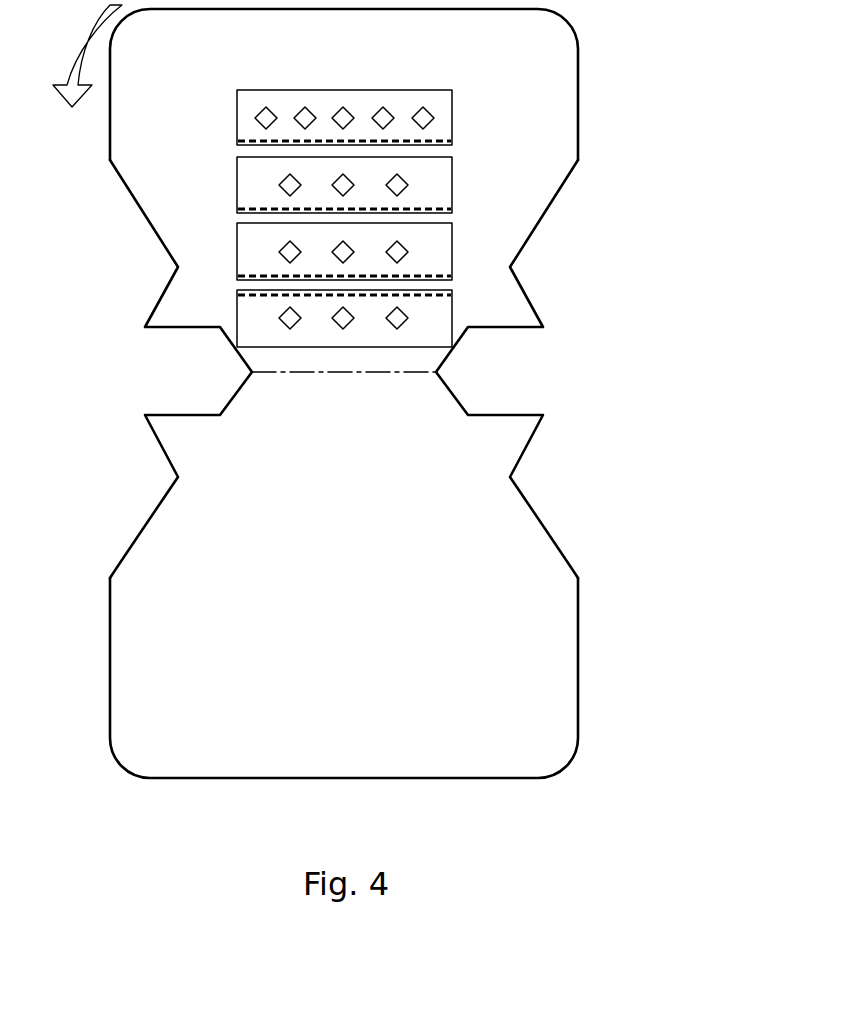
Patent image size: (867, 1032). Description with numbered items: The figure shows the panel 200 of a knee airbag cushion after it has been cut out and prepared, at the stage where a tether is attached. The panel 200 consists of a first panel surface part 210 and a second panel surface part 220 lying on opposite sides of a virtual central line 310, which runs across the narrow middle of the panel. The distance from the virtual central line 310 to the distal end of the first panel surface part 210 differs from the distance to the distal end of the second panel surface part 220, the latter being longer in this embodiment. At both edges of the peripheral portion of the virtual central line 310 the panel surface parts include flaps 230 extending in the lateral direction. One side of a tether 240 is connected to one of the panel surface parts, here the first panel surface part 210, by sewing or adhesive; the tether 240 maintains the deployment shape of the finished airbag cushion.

The panel 200 is at (412, 393).
The first panel surface part 210 is at (492, 205).
The second panel surface part 220 is at (493, 587).
The flaps 230 is at (168, 313).
The tether 240 is at (247, 315).
The virtual central line 310 is at (297, 372).